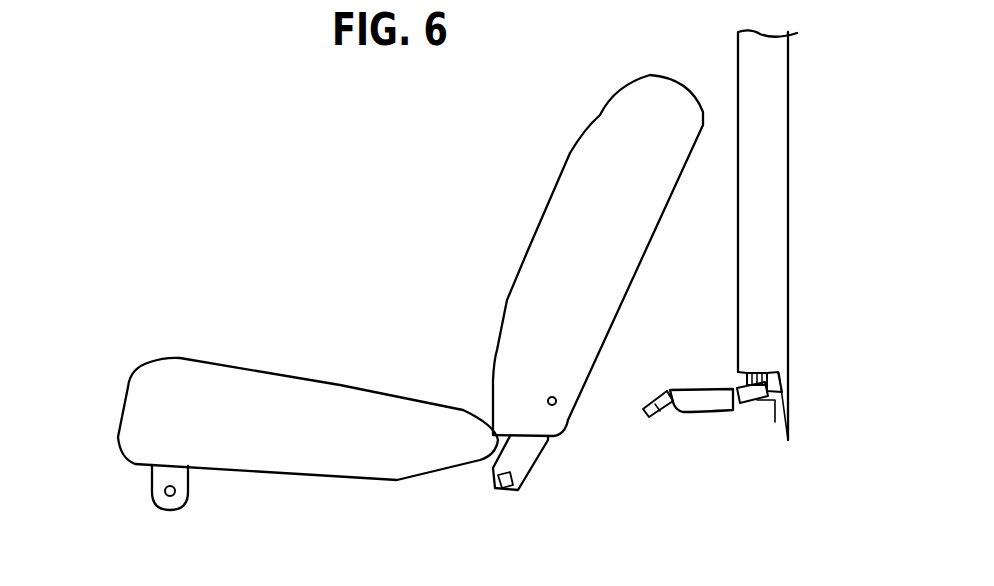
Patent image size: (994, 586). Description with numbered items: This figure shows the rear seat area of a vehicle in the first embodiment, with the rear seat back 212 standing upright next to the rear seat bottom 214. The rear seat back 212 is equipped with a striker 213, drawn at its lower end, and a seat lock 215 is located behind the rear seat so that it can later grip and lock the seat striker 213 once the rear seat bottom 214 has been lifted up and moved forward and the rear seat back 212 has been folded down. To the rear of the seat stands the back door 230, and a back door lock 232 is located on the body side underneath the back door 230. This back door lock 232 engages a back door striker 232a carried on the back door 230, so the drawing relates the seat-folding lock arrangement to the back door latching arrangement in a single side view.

The rear seat back 212 is at (546, 210).
The striker 213 is at (532, 470).
The rear seat bottom 214 is at (122, 447).
The seat lock 215 is at (652, 417).
The back door 230 is at (789, 267).
The back door lock 232 is at (755, 368).
The back door striker 232a is at (737, 375).